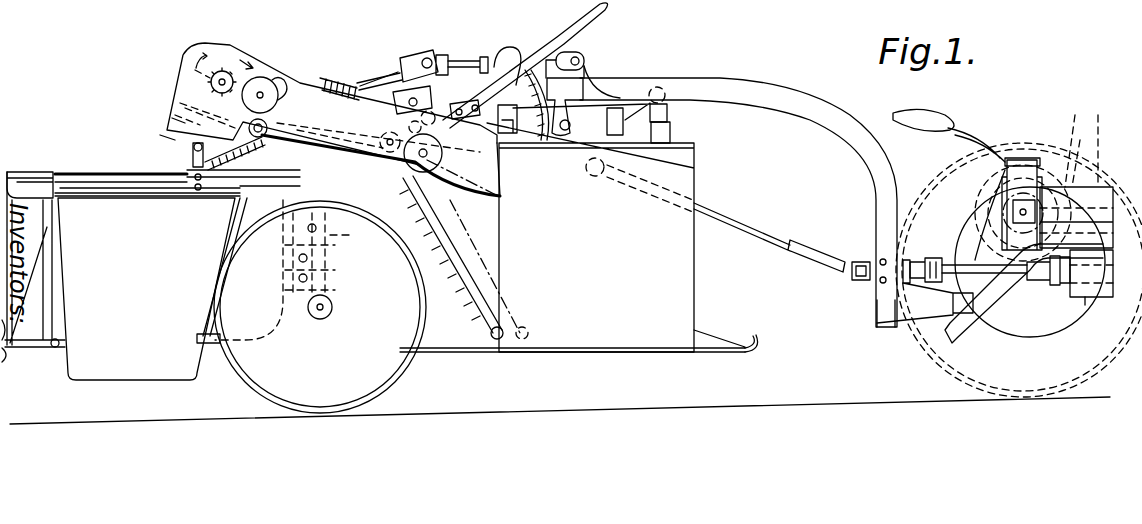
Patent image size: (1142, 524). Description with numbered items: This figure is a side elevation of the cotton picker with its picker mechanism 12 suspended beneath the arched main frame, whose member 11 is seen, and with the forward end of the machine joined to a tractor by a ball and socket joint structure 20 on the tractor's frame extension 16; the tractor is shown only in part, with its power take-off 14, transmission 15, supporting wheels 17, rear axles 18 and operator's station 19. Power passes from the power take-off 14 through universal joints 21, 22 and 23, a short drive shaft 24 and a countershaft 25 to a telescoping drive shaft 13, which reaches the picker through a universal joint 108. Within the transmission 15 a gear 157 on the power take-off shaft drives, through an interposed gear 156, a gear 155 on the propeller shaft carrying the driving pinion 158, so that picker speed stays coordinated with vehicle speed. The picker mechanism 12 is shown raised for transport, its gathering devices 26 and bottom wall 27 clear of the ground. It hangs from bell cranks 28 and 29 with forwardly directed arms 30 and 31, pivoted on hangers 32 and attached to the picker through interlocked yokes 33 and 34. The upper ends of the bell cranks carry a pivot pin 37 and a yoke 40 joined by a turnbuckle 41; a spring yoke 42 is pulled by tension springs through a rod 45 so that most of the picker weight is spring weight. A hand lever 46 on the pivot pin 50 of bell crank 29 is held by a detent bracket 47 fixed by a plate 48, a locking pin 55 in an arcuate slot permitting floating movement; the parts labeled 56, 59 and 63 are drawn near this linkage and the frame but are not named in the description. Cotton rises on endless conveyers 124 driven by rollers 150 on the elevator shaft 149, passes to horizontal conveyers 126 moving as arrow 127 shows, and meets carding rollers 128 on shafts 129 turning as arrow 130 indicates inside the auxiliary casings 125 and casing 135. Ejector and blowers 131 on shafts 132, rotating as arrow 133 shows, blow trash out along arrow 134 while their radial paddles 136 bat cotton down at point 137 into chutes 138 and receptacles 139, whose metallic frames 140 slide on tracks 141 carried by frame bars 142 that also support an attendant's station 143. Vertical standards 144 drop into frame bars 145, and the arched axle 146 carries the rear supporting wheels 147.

The main frame member 11 is at (742, 78).
The picker mechanism 12 is at (590, 228).
The telescoping drive shaft 13 is at (755, 232).
The power take-off 14 is at (1045, 300).
The transmission 15 is at (1105, 300).
The frame extension 16 is at (1003, 320).
The supporting wheels 17 is at (1065, 135).
The rear axles 18 is at (990, 160).
The operator's station 19 is at (920, 115).
The ball and socket joint structure 20 is at (965, 330).
The universal joint 21 is at (858, 265).
The universal joint 22 is at (925, 255).
The universal joint 23 is at (1040, 282).
The short drive shaft 24 is at (945, 263).
The countershaft 25 is at (876, 262).
The gathering devices 26 is at (752, 354).
The bottom wall 27 is at (665, 352).
The bell crank 28 is at (620, 105).
The bell crank 29 is at (419, 56).
The forwardly directed arm 30 is at (665, 100).
The forwardly directed arm 31 is at (486, 169).
The hangers 32 is at (372, 85).
The yoke 33 is at (668, 110).
The yoke 34 is at (672, 132).
The pivot pin 37 is at (585, 55).
The yoke 40 is at (586, 57).
The turnbuckle 41 is at (192, 165).
The spring yoke 42 is at (410, 90).
The rod 45 is at (360, 85).
The hand lever 46 is at (548, 44).
The detent bracket 47 is at (510, 58).
The plate 48 is at (467, 58).
The pivot pin 50 is at (353, 239).
The locking pin 55 is at (545, 150).
The pawl 56 is at (553, 160).
The plate 59 is at (455, 100).
The bracket plate 63 is at (920, 325).
The universal joint 108 is at (625, 188).
The endless conveyers 124 is at (341, 255).
The auxiliary casings 125 is at (330, 80).
The horizontal conveyers 126 is at (305, 138).
The arrow 127 is at (240, 172).
The carding rollers 128 is at (202, 151).
The shafts 129 is at (260, 92).
The arrow 130 is at (150, 193).
The ejector and blowers 131 is at (190, 57).
The shafts 132 is at (210, 86).
The arrow 133 is at (196, 76).
The arrow 134 is at (250, 65).
The casing 135 is at (278, 78).
The radial paddles 136 is at (165, 132).
The point 137 is at (210, 123).
The chutes 138 is at (170, 120).
The receptacles 139 is at (140, 190).
The metallic frames 140 is at (100, 193).
The tracks 141 is at (225, 210).
The frame bars 142 is at (70, 174).
The attendant's station 143 is at (12, 172).
The vertical standards 144 is at (48, 172).
The frame bars 145 is at (214, 350).
The arched axle 146 is at (333, 303).
The rear supporting wheels 147 is at (425, 333).
The elevator shaft 149 is at (490, 230).
The rollers 150 is at (500, 205).
The gear 155 is at (1097, 138).
The interposed gear 156 is at (1070, 149).
The gear 157 is at (1085, 318).
The driving pinion 158 is at (1076, 203).